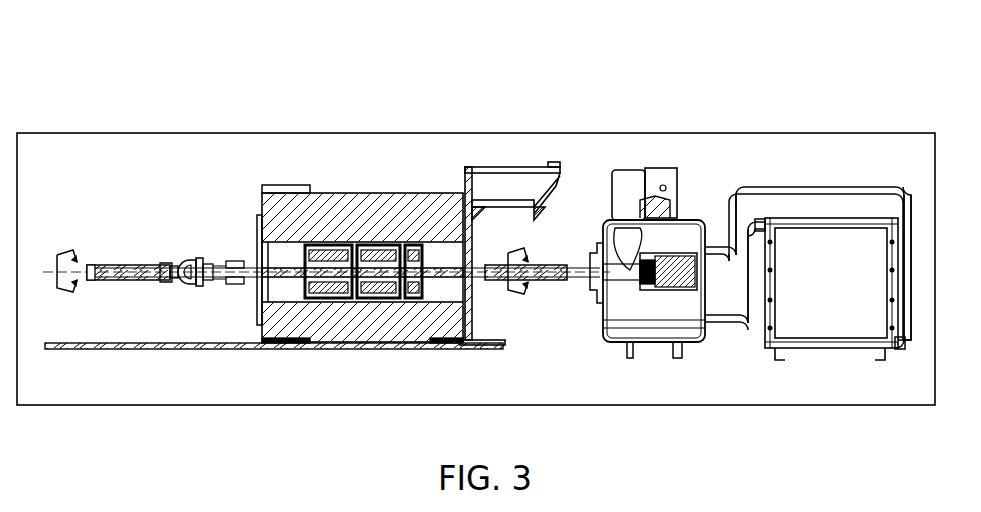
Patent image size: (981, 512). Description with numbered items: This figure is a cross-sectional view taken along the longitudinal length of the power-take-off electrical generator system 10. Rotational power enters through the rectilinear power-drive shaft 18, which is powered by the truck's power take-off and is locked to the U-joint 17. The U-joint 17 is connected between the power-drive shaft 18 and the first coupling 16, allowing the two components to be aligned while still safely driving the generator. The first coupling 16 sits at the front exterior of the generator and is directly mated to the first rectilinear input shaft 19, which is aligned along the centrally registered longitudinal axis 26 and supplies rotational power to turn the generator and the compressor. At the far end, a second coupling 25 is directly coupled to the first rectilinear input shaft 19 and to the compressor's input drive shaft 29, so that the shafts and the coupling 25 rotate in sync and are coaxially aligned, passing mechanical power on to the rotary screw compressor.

The propulsion system 10 is at (234, 122).
The first coupling 16 is at (238, 262).
The U-joint 17 is at (190, 286).
The rectilinear power-drive shaft 18 is at (143, 265).
The first rectilinear input shaft 19 is at (287, 275).
The second coupling 25 is at (500, 272).
The centrally registered longitudinal axis 26 is at (52, 268).
The input drive shaft 29 is at (572, 268).